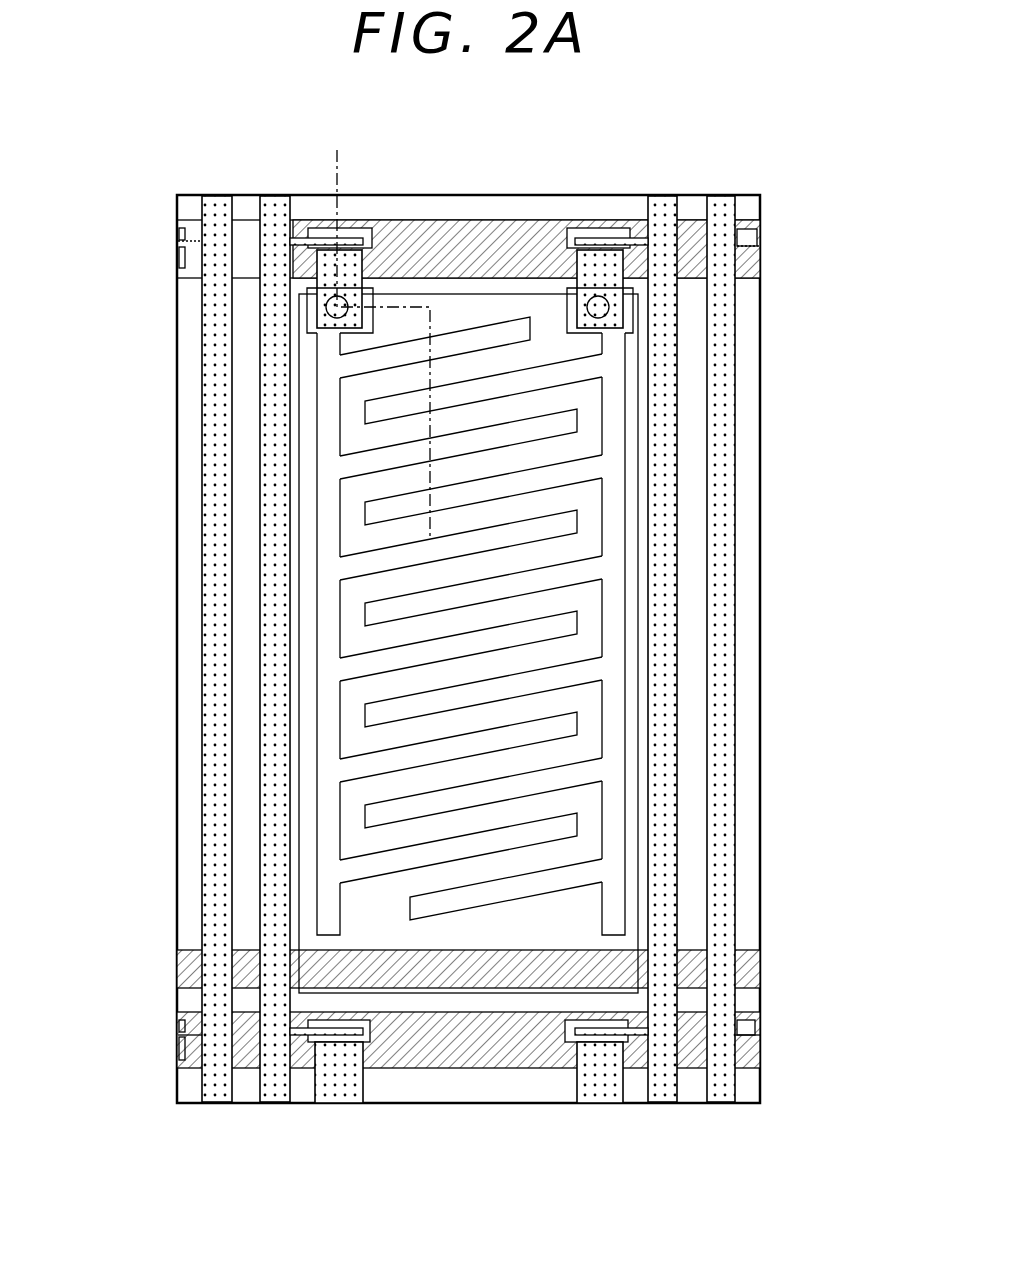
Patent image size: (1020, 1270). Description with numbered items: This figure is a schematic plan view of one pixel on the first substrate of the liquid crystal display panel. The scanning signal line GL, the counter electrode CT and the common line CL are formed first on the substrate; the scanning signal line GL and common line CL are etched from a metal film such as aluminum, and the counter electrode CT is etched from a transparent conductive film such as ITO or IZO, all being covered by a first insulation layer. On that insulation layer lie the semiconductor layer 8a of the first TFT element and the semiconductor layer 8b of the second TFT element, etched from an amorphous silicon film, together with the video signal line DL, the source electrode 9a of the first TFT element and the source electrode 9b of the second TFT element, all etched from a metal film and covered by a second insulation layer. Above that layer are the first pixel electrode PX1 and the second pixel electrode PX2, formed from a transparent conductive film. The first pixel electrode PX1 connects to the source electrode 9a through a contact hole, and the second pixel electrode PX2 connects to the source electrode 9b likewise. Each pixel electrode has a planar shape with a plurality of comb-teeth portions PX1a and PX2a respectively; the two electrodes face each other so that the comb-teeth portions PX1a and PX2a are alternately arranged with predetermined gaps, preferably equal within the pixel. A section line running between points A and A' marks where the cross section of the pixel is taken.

The scanning signal line GL is at (455, 228).
The video signal line DL is at (258, 700).
The common line CL is at (460, 978).
The counter electrode CT is at (517, 935).
The first pixel electrode PX1 is at (311, 611).
The comb-teeth portions of the first pixel electrode PX1a is at (385, 458).
The second pixel electrode PX2 is at (637, 611).
The comb-teeth portions of the second pixel electrode PX2a is at (555, 472).
The semiconductor layer of the first TFT element 8a is at (368, 230).
The semiconductor layer of the second TFT element 8b is at (570, 245).
The source electrode of the first TFT element 9a is at (292, 262).
The source electrode of the second TFT element 9b is at (643, 262).
The section line end A is at (386, 347).
The section line end A' is at (431, 562).